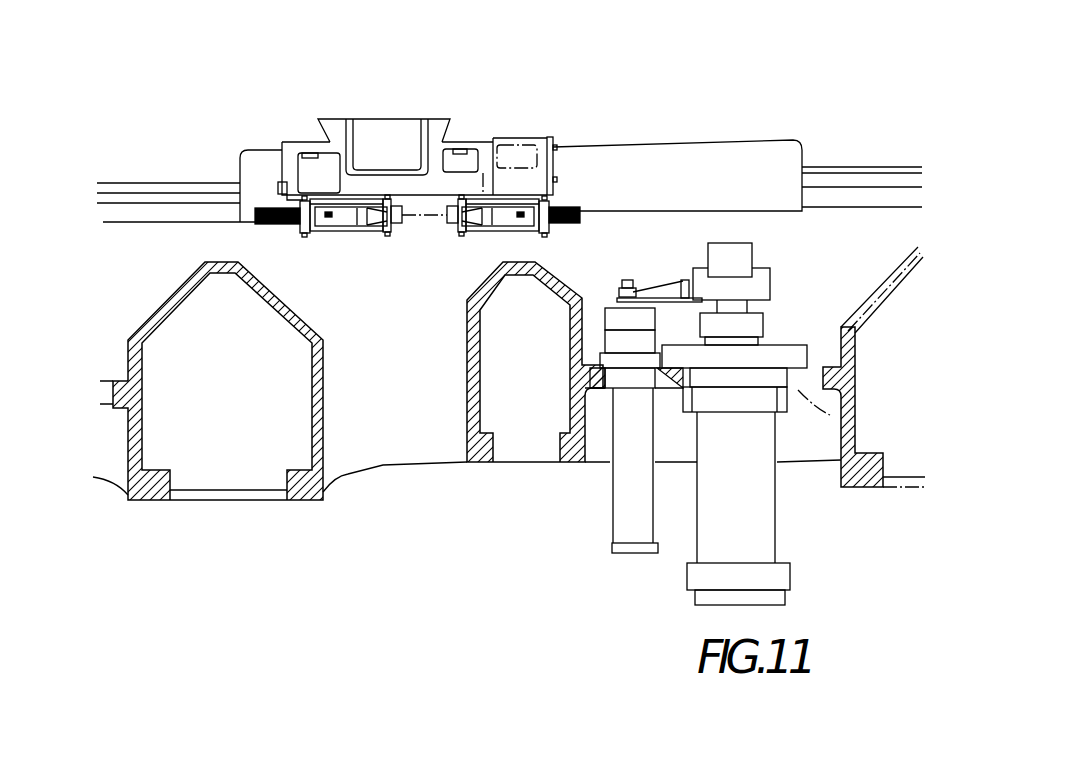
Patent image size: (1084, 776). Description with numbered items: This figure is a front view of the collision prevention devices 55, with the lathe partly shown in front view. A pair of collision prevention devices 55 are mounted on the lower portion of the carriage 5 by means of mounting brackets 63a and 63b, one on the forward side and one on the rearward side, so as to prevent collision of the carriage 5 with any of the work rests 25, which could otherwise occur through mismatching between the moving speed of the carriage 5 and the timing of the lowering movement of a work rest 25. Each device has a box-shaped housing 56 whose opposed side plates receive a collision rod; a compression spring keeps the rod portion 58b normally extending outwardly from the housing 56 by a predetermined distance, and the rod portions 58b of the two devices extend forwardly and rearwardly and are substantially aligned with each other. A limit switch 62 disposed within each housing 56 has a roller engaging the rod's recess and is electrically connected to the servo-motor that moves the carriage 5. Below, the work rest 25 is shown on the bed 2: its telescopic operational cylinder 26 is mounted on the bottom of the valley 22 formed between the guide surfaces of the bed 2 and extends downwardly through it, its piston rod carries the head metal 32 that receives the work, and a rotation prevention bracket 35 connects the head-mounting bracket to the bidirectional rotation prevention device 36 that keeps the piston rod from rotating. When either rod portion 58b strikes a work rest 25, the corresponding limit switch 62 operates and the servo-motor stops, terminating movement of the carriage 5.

The bed 2 is at (827, 165).
The carriage 5 is at (556, 86).
The valley 22 is at (830, 415).
The work rest 25 is at (793, 278).
The operational cylinder 26 is at (787, 492).
The head metal 32 is at (744, 243).
The rotation prevention bracket 35 is at (637, 292).
The bidirectional rotation prevention device 36 is at (606, 489).
The collision prevention device 55 is at (345, 243).
The housing 56 is at (373, 241).
The rod portion 58b is at (262, 207).
The limit switch 62 is at (327, 222).
The mounting bracket 63a is at (281, 186).
The mounting bracket 63b is at (551, 167).